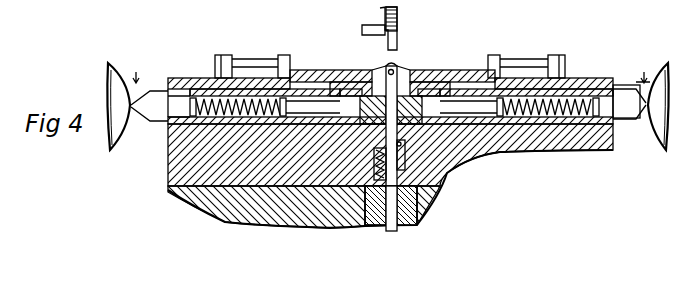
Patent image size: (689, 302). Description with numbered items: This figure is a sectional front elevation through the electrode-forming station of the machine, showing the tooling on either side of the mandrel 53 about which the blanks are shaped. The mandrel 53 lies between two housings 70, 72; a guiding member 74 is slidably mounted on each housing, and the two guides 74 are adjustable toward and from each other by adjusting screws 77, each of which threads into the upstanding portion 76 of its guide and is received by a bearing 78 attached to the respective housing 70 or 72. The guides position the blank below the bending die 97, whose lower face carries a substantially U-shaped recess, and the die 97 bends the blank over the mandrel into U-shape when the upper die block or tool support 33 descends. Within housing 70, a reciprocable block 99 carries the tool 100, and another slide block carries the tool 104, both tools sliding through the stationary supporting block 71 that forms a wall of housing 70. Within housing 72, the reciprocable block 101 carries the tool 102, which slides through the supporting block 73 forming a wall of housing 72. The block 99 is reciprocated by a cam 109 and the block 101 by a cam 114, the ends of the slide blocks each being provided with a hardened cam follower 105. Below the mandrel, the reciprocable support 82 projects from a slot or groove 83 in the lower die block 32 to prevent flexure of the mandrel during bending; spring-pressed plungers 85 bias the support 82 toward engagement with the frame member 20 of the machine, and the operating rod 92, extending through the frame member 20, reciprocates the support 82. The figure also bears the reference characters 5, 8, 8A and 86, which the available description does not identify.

The gap 5 is at (390, 69).
The pin 8 is at (394, 74).
The bore 8A is at (372, 214).
The frame member 20 is at (218, 226).
The lower die block 32 is at (170, 170).
The upper die block or tool support 33 is at (368, 28).
The mandrel 53 is at (400, 90).
The housing 70 is at (190, 80).
The stationary supporting block 71 is at (314, 220).
The housing 72 is at (600, 78).
The supporting block 73 is at (460, 170).
The guiding member 74 is at (362, 78).
The upstanding portion 76 is at (283, 56).
The adjusting screw 77 is at (248, 58).
The bearing 78 is at (222, 56).
The reciprocable support 82 is at (404, 150).
The slot or groove 83 is at (401, 143).
The spring-pressed plunger 85 is at (385, 184).
The spring 86 is at (374, 164).
The operating rod 92 is at (376, 231).
The bending die 97 is at (398, 20).
The block 99 is at (182, 92).
The tool 100 is at (338, 72).
The block 101 is at (606, 84).
The tool 102 is at (440, 75).
The tool 104 is at (378, 80).
The hardened cam follower 105 is at (158, 121).
The cam 109 is at (118, 125).
The cam 114 is at (662, 74).